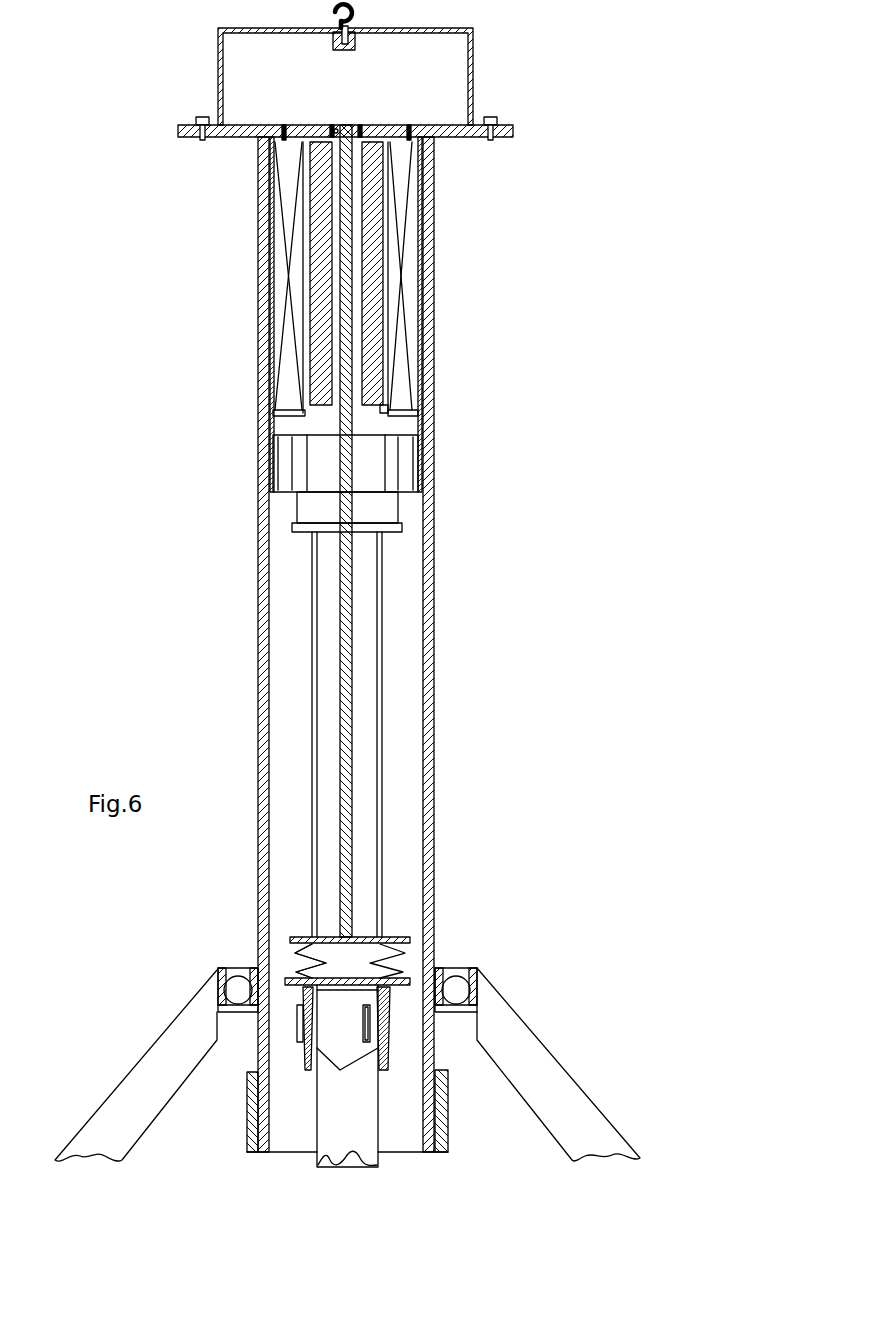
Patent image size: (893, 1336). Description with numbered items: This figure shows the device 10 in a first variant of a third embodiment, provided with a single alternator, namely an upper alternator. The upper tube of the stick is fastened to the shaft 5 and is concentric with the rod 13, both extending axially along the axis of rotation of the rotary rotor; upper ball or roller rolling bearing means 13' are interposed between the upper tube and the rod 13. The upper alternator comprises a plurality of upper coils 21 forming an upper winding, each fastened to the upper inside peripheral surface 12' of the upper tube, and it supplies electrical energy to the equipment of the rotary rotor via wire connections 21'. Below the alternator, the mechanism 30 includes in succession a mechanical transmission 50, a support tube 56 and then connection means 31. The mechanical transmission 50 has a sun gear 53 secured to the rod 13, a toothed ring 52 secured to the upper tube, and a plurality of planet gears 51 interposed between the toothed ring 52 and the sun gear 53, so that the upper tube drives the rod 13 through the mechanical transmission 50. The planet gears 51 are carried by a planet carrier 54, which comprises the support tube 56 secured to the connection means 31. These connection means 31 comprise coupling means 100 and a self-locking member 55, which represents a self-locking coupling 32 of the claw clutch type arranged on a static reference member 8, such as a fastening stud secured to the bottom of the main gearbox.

The device 10 is at (601, 87).
The shaft 5 is at (432, 272).
The mechanism 30 is at (552, 468).
The rod 13 is at (363, 501).
The upper ball or roller rolling bearing means 13' is at (332, 98).
The upper coils 21 is at (351, 277).
The wire connections 21' is at (354, 93).
The upper inside peripheral surface 12' is at (315, 383).
The mechanical transmission 50 is at (345, 477).
The planet gears 51 is at (408, 435).
The sun gear 53 is at (368, 435).
The toothed ring 52 is at (274, 476).
The planet carrier 54 is at (398, 530).
The support tube 56 is at (382, 716).
The coupling means 100 is at (412, 960).
The connection means 31 is at (286, 961).
The static reference member 8 is at (380, 1167).
The self-locking member 55 is at (292, 1056).
The self-locking coupling 32 is at (388, 1050).